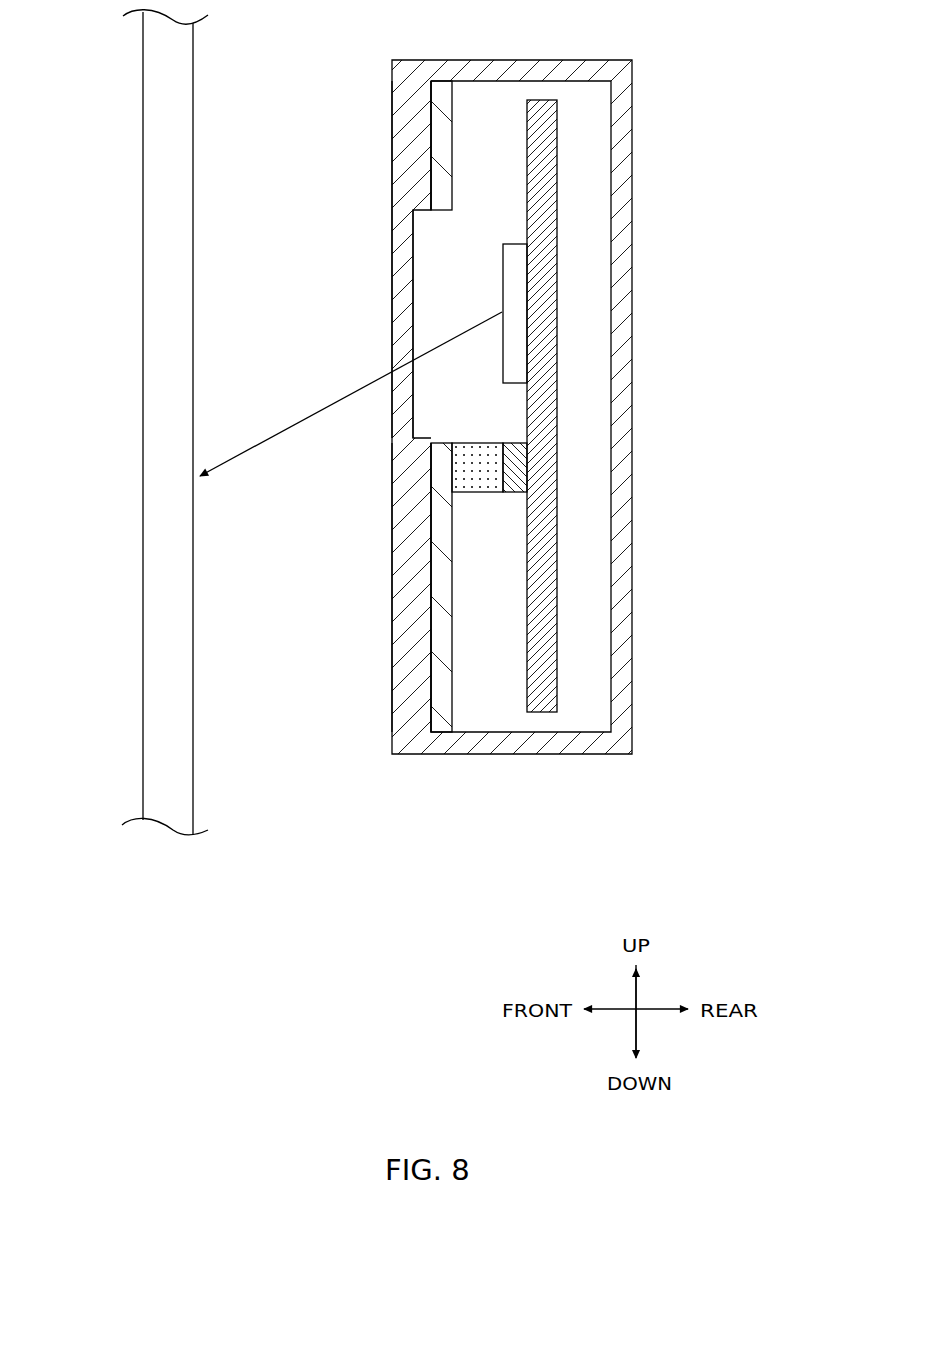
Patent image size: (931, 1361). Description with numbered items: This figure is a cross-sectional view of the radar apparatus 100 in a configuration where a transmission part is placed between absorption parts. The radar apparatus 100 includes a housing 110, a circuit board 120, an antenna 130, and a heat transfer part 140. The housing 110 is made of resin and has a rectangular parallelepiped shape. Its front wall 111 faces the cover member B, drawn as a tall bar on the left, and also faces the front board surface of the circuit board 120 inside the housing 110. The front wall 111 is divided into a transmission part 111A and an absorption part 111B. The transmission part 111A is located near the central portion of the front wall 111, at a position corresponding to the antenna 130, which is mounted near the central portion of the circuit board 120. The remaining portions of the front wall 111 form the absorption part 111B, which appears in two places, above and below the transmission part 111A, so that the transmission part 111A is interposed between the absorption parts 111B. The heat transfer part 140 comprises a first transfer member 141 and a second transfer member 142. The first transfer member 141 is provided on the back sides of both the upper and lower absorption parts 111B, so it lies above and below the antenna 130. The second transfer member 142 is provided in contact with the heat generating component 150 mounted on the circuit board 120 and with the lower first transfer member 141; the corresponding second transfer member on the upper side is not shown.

The radar apparatus 100 is at (790, 64).
The housing 110 is at (654, 59).
The front wall 111 is at (391, 71).
The transmission part 111A is at (402, 297).
The absorption part 111B is at (412, 115).
The circuit board 120 is at (553, 112).
The antenna 130 is at (520, 293).
The heat transfer part 140 is at (498, 444).
The first transfer member 141 is at (440, 121).
The second transfer member 142 is at (486, 465).
The heat generating component 150 is at (513, 477).
The cover member B is at (158, 191).